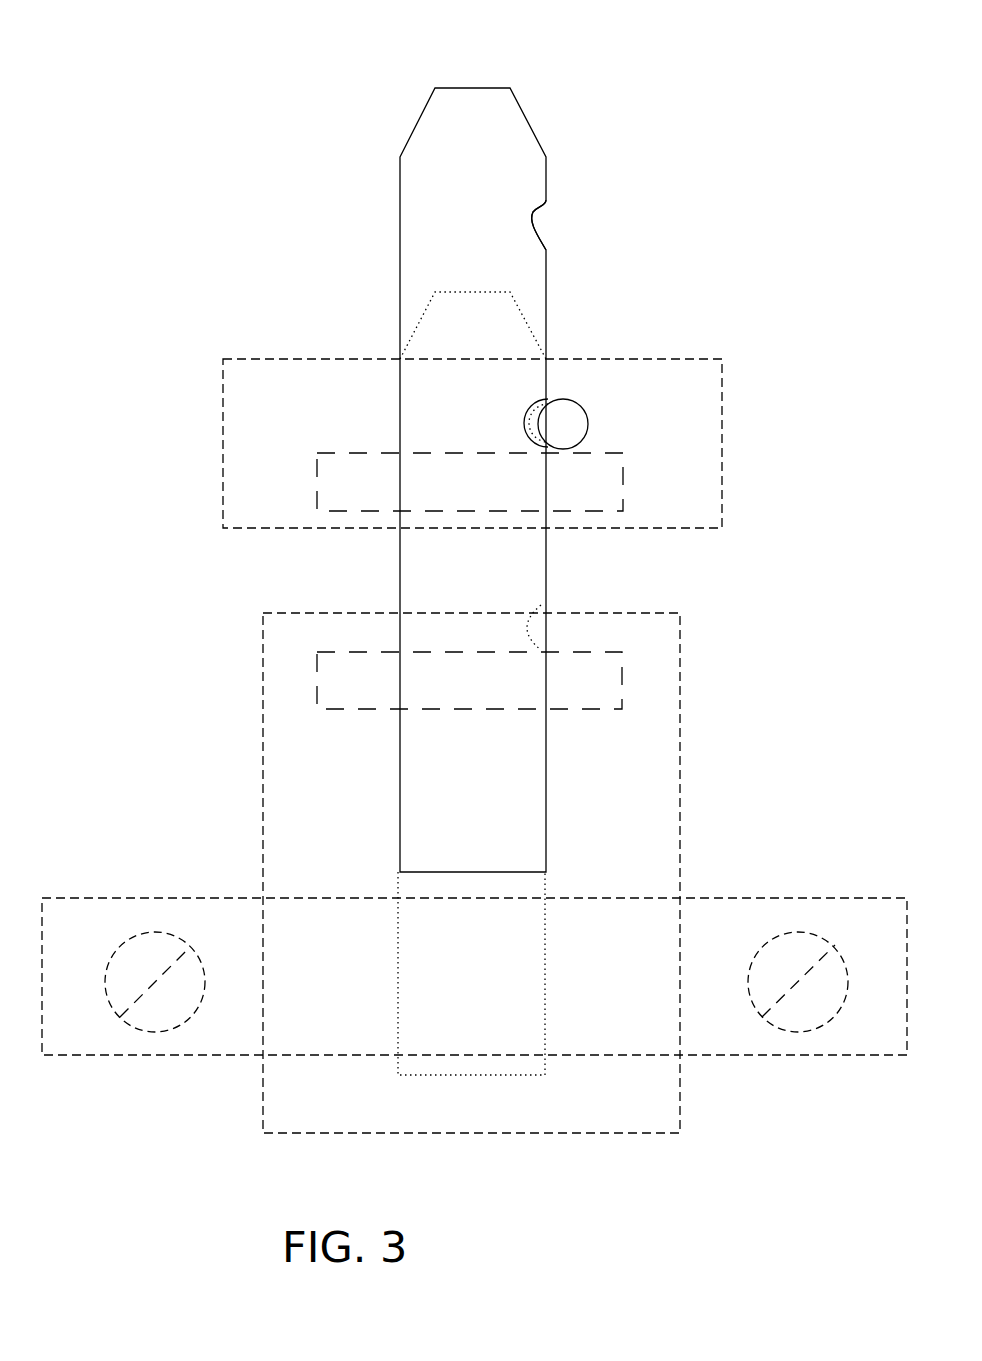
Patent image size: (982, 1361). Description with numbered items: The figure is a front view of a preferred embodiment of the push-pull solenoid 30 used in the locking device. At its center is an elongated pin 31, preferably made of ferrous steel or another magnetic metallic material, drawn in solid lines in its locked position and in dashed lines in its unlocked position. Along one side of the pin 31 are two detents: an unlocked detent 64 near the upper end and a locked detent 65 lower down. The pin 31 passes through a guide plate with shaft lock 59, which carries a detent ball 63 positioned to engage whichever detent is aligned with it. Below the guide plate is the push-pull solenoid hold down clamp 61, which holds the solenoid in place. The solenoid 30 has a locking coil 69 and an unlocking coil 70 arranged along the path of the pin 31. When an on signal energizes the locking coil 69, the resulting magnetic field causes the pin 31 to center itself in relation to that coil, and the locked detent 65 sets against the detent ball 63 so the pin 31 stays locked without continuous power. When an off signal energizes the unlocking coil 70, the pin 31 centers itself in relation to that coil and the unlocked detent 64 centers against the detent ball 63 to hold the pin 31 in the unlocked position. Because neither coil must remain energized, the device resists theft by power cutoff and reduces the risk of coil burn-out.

The push-pull solenoid 30 is at (272, 153).
The pin 31 is at (422, 117).
The guide plate with shaft lock 59 is at (722, 449).
The push-pull solenoid hold down clamp 61 is at (73, 920).
The detent ball 63 is at (570, 423).
The unlocked detent 64 is at (535, 213).
The locked detent 65 is at (538, 417).
The locking coil 69 is at (316, 460).
The unlocking coil 70 is at (317, 690).